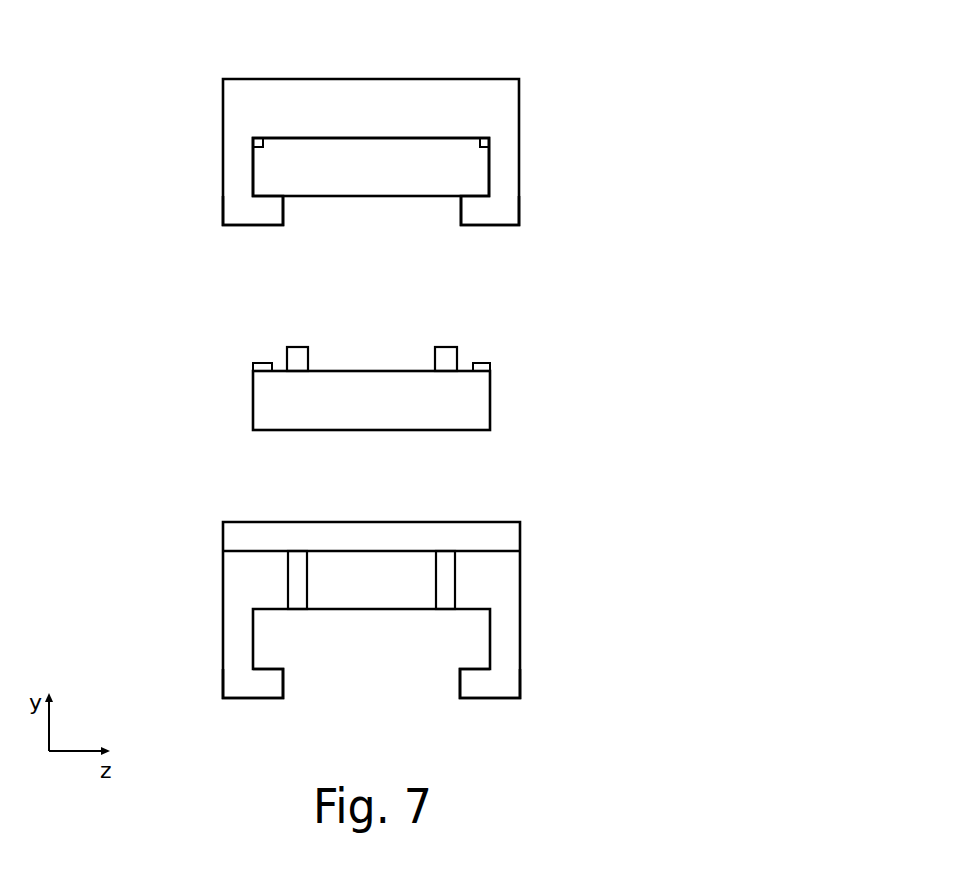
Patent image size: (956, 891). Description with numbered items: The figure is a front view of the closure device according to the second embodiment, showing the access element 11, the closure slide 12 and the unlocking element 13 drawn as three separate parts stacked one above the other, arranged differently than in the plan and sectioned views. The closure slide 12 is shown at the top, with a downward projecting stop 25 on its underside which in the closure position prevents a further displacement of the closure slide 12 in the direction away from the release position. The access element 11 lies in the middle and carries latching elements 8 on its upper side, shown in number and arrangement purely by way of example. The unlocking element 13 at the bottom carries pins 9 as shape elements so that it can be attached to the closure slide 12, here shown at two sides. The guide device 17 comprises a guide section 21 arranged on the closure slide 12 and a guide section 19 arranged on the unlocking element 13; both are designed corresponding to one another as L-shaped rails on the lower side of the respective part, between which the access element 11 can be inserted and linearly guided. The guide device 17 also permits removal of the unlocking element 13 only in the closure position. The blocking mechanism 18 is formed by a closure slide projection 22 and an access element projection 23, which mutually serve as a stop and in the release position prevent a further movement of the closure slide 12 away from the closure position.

The latching element 8 is at (297, 360).
The pin 9 is at (297, 603).
The access element 11 is at (491, 398).
The closure slide 12 is at (522, 102).
The unlocking element 13 is at (520, 584).
The guide device 17 is at (392, 481).
The blocking mechanism 18 is at (362, 232).
The guide section 19 is at (270, 688).
The guide section 21 is at (268, 217).
The closure slide projection 22 is at (255, 366).
The access element projection 23 is at (253, 140).
The stop 25 is at (373, 175).